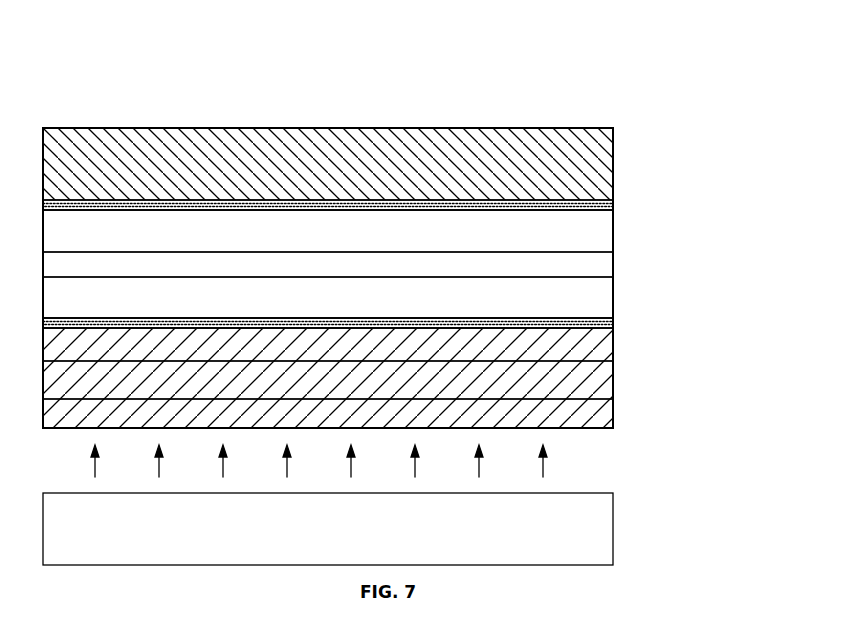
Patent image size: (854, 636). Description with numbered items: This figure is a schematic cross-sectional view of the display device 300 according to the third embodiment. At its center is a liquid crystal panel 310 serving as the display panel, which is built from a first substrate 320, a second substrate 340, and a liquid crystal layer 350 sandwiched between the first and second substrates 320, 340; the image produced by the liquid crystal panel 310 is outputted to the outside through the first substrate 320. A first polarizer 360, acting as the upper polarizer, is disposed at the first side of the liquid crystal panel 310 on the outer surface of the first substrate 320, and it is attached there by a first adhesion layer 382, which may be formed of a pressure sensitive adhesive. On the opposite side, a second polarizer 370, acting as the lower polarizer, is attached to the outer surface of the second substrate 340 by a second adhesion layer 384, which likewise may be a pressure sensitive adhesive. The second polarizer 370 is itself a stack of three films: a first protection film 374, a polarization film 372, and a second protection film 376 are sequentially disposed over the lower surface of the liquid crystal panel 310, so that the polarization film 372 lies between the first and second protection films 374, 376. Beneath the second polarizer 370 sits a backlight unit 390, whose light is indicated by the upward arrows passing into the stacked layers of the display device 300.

The display device 300 is at (572, 88).
The liquid crystal panel 310 is at (709, 233).
The first substrate 320 is at (585, 235).
The second substrate 340 is at (585, 300).
The liquid crystal layer 350 is at (585, 266).
The first polarizer 360 is at (585, 163).
The second polarizer 370 is at (709, 348).
The polarization film 372 is at (585, 374).
The first protection film 374 is at (585, 345).
The second protection film 376 is at (585, 410).
The first adhesion layer 382 is at (585, 205).
The second adhesion layer 384 is at (585, 322).
The backlight unit 390 is at (585, 532).